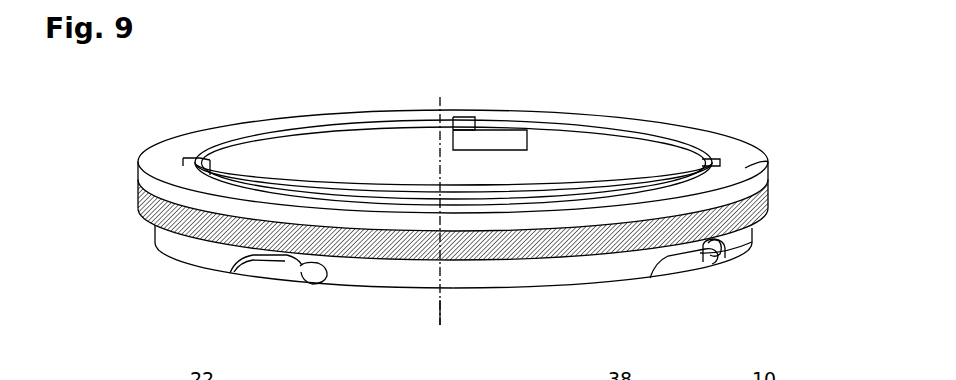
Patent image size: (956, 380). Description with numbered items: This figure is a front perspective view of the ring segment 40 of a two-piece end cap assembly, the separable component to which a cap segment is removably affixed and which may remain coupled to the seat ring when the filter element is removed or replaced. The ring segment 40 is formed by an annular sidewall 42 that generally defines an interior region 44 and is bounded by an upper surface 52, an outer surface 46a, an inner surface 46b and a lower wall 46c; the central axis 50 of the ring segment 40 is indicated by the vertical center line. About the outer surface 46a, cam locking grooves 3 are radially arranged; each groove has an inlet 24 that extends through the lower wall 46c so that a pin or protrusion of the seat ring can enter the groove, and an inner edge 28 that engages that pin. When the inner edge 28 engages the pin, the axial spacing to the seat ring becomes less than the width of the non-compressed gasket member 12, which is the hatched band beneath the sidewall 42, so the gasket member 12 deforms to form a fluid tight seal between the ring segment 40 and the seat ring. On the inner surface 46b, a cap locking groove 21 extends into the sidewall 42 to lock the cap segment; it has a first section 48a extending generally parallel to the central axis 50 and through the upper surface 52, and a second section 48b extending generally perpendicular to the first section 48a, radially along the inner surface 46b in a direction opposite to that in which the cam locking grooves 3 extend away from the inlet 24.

The cam locking groove 3 is at (287, 270).
The gasket member 12 is at (628, 253).
The cap locking groove 21 is at (476, 137).
The inlet 24 is at (252, 272).
The inner edge 28 is at (305, 268).
The ring segment 40 is at (710, 140).
The sidewall 42 is at (597, 137).
The interior region 44 is at (335, 145).
The outer surface 46a is at (192, 246).
The inner surface 46b is at (263, 165).
The lower wall 46c is at (626, 281).
The first section 48a is at (468, 118).
The second section 48b is at (500, 140).
The central axis 50 is at (443, 307).
The upper surface 52 is at (747, 168).